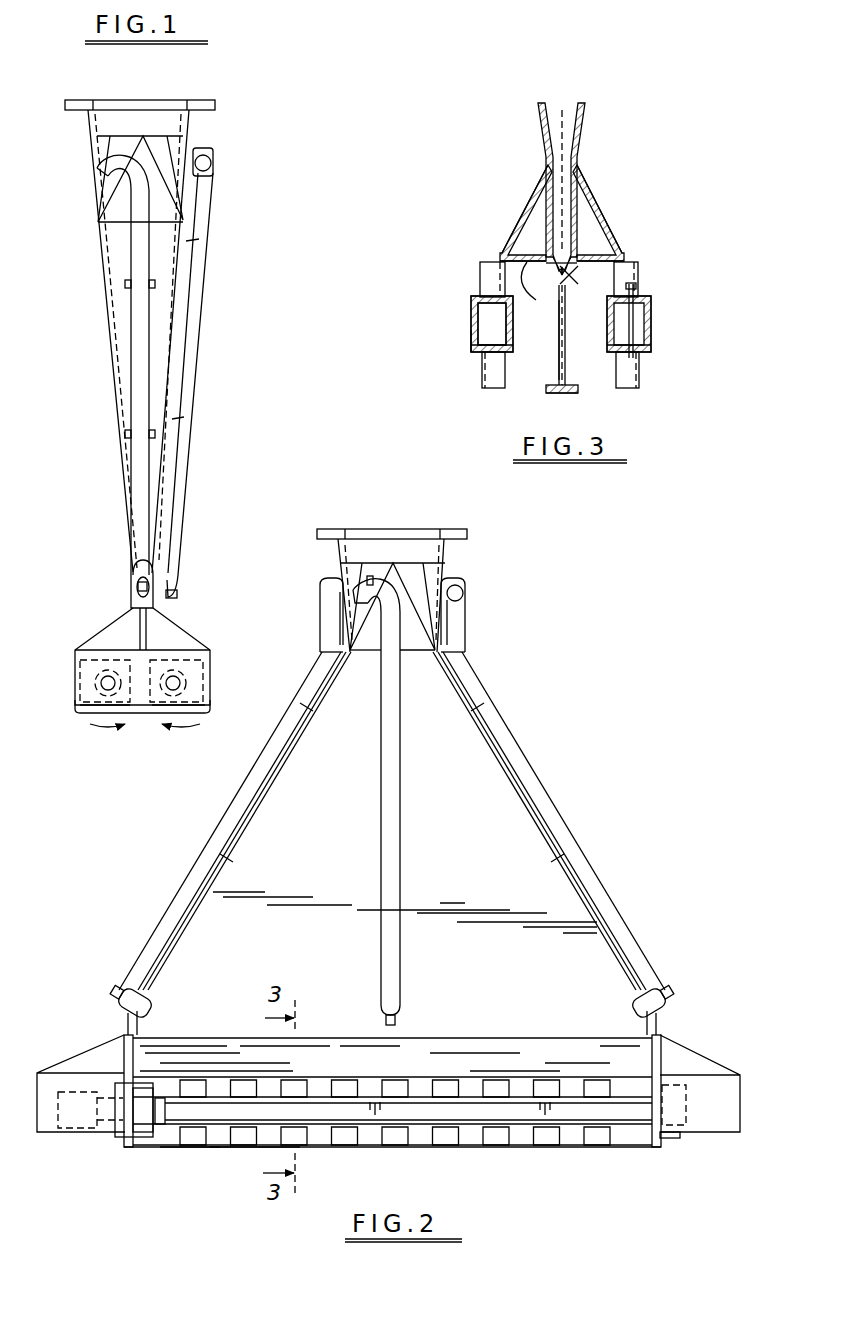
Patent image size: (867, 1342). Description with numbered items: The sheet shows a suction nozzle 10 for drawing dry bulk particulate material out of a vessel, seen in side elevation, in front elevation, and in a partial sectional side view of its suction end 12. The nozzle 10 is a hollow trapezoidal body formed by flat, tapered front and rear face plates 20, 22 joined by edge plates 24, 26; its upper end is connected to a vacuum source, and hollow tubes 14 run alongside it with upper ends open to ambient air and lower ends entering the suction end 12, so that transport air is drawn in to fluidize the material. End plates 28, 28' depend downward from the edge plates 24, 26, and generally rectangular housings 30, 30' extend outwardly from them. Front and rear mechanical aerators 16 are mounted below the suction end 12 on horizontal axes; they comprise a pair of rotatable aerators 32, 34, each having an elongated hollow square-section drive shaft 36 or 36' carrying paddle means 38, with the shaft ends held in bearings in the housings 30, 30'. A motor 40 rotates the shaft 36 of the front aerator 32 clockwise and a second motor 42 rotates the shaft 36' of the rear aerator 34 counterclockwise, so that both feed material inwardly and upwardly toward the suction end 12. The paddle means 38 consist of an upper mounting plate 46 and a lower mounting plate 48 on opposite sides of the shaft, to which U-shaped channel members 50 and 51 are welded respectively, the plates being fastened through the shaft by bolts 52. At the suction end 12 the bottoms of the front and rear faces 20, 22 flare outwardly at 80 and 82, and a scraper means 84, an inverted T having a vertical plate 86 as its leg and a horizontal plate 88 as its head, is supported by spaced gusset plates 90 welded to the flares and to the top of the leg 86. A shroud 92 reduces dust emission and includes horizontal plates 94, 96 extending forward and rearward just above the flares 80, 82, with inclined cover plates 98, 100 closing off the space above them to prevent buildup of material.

In FIG. 1, the suction nozzle 10 is at (238, 210).
In FIG. 2, the suction nozzle 10 is at (275, 704).
In FIG. 1, the suction end 12 is at (200, 613).
In FIG. 3, the suction end 12 is at (580, 335).
In FIG. 2, the suction end 12 is at (600, 1162).
In FIG. 1, the hollow tubes 14 is at (150, 358).
In FIG. 2, the hollow tubes 14 is at (176, 906).
In FIG. 3, the mechanical aerators 16 is at (469, 332).
In FIG. 2, the mechanical aerators 16 is at (498, 1152).
In FIG. 3, the front face plate 20 is at (582, 140).
In FIG. 2, the front face plate 20 is at (523, 973).
In FIG. 3, the rear face plate 22 is at (540, 140).
In FIG. 1, the edge plate 24 is at (140, 117).
In FIG. 2, the edge plate 24 is at (257, 807).
In FIG. 2, the edge plate 26 is at (583, 903).
In FIG. 2, the end plate 28 is at (95, 1053).
In FIG. 2, the end plate 28' is at (697, 1048).
In FIG. 1, the rectangular housing 30 is at (127, 652).
In FIG. 2, the rectangular housing 30 is at (95, 1073).
In FIG. 2, the rectangular housing 30' is at (705, 1075).
In FIG. 2, the front rotatable aerator 32 is at (430, 1110).
In FIG. 3, the rear rotatable aerator 34 is at (448, 349).
In FIG. 2, the hollow drive shaft 36 is at (397, 1149).
In FIG. 3, the hollow drive shaft 36' is at (436, 323).
In FIG. 2, the paddle means 38 is at (216, 1147).
In FIG. 1, the motor 40 is at (157, 708).
In FIG. 2, the motor 40 is at (72, 1117).
In FIG. 1, the second motor 42 is at (85, 713).
In FIG. 2, the second motor 42 is at (90, 1110).
In FIG. 3, the upper mounting plate 46 is at (472, 300).
In FIG. 3, the lower mounting plate 48 is at (473, 347).
In FIG. 3, the U-shaped channel members 50 is at (478, 270).
In FIG. 2, the U-shaped channel members 50 is at (297, 1082).
In FIG. 3, the U-shaped channel members 51 is at (497, 396).
In FIG. 2, the U-shaped channel members 51 is at (320, 1140).
In FIG. 3, the bolts 52 is at (652, 330).
In FIG. 3, the front flare 80 is at (587, 265).
In FIG. 3, the rear flare 82 is at (535, 292).
In FIG. 3, the scraper means 84 is at (540, 388).
In FIG. 2, the scraper means 84 is at (267, 1151).
In FIG. 3, the vertical plate 86 is at (562, 378).
In FIG. 2, the vertical plate 86 is at (630, 1088).
In FIG. 3, the horizontal plate 88 is at (563, 393).
In FIG. 2, the horizontal plate 88 is at (550, 1147).
In FIG. 3, the gusset plates 90 is at (583, 280).
In FIG. 3, the shroud 92 is at (636, 222).
In FIG. 2, the shroud 92 is at (522, 1057).
In FIG. 3, the first horizontal plate 94 is at (603, 250).
In FIG. 2, the first horizontal plate 94 is at (368, 1084).
In FIG. 3, the second horizontal plate 96 is at (521, 248).
In FIG. 3, the cover plate 98 is at (597, 197).
In FIG. 2, the cover plate 98 is at (457, 1037).
In FIG. 3, the cover plate 100 is at (537, 197).